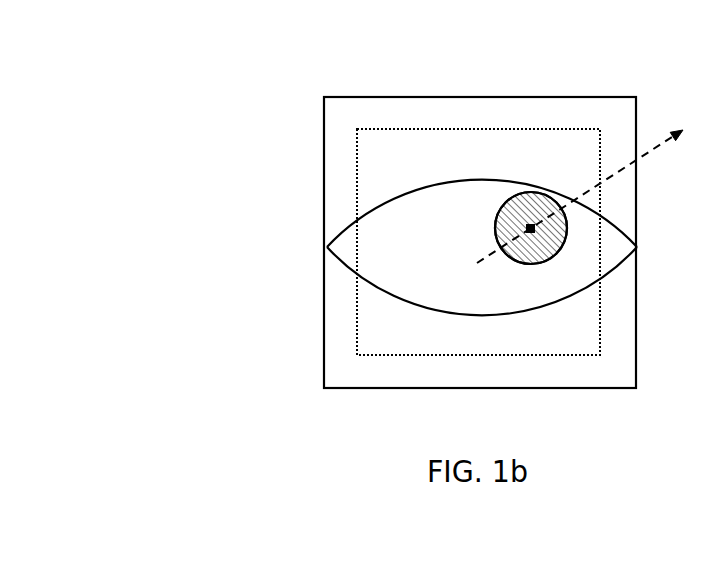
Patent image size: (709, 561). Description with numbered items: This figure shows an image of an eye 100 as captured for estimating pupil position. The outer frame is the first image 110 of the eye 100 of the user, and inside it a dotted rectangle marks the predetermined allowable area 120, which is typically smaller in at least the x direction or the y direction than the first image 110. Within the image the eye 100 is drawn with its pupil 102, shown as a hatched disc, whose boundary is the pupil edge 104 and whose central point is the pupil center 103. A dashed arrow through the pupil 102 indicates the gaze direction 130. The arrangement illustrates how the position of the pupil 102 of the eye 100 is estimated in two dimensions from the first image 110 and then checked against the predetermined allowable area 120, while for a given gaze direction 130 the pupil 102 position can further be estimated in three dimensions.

The eye 100 is at (343, 227).
The first image 110 is at (343, 97).
The predetermined allowable area 120 is at (407, 130).
The pupil 102 is at (530, 210).
The pupil center 103 is at (534, 233).
The pupil edge 104 is at (568, 230).
The gaze direction 130 is at (648, 153).